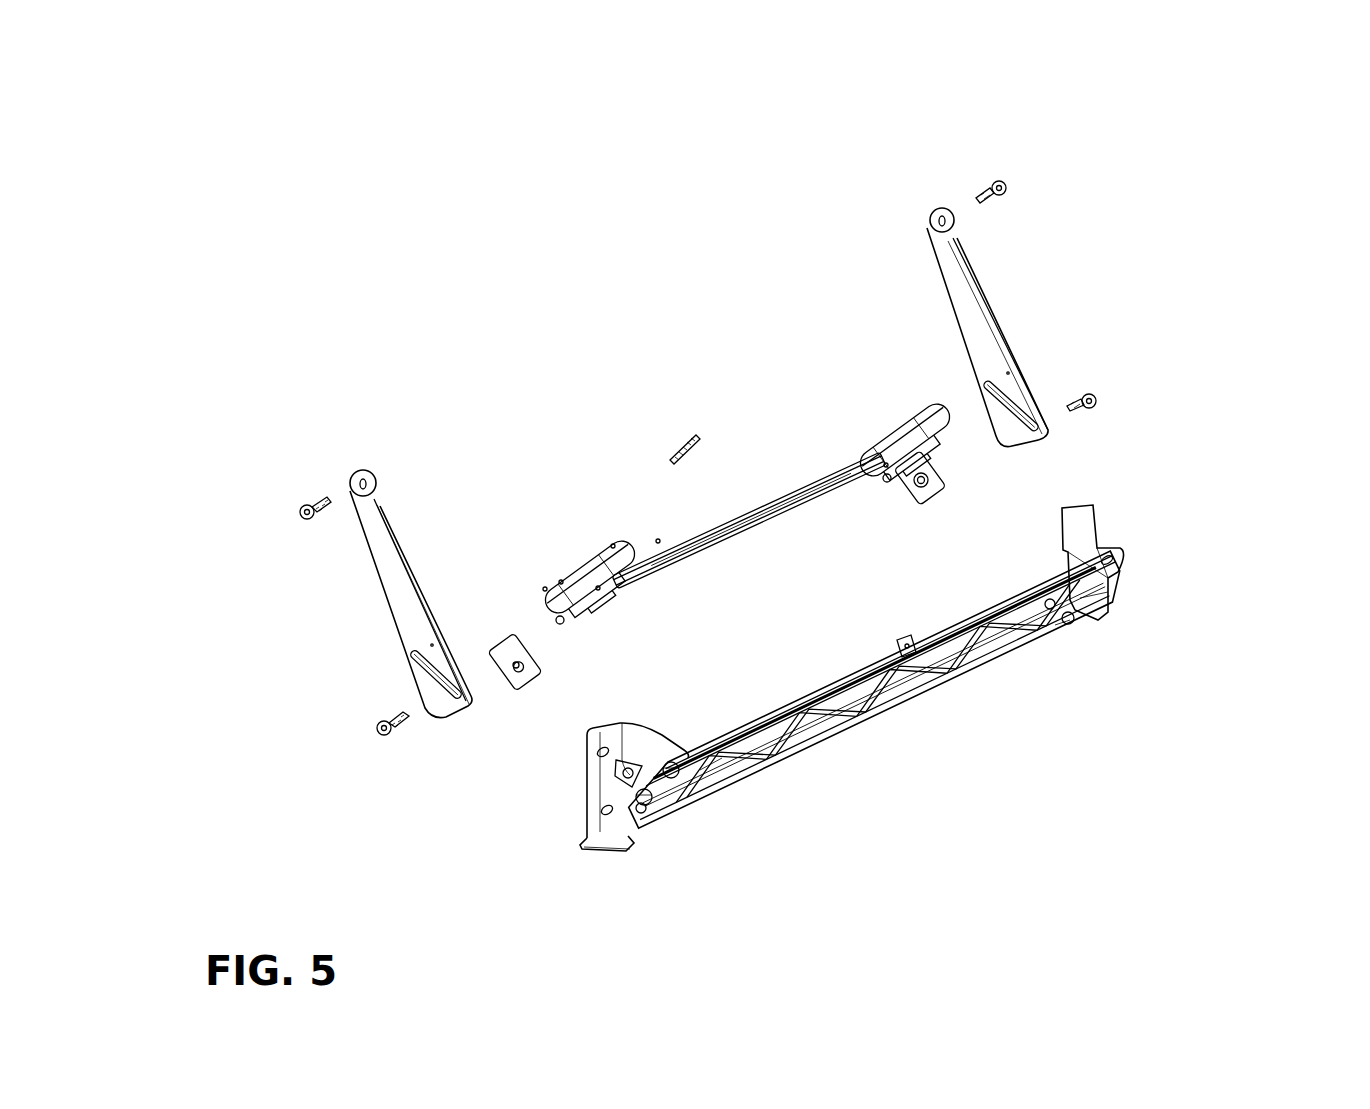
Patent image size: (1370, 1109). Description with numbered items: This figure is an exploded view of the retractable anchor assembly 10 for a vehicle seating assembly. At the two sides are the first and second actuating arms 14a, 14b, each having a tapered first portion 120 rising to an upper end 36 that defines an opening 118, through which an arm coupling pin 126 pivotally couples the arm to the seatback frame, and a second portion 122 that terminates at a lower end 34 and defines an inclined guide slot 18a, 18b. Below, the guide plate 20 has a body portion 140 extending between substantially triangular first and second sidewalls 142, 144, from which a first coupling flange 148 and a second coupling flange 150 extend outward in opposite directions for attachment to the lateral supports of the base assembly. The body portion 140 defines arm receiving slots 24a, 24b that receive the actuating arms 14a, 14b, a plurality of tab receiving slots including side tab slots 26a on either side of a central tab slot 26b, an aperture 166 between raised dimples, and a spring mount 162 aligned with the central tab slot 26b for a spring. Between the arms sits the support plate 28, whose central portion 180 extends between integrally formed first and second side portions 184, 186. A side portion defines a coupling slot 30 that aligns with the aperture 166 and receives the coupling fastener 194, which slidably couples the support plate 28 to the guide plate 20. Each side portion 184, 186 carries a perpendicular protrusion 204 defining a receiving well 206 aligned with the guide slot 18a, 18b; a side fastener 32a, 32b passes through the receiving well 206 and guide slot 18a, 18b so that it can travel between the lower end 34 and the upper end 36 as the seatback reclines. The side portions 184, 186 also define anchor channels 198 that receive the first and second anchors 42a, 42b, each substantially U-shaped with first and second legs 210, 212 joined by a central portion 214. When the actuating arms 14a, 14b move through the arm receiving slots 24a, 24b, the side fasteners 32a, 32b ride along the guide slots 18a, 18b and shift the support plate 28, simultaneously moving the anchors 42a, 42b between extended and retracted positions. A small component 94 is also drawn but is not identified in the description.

The retractable anchor assembly 10 is at (1178, 106).
The first actuating arm 14a is at (372, 623).
The second actuating arm 14b is at (1013, 295).
The guide slot 18a is at (406, 660).
The guide slot 18b is at (1020, 400).
The guide plate 20 is at (880, 720).
The arm receiving slot 24a is at (653, 824).
The arm receiving slot 24b is at (1082, 626).
The side tab slot 26a is at (754, 770).
The central tab slot 26b is at (868, 722).
The support plate 28 is at (638, 505).
The coupling slot 30 is at (560, 624).
The side fastener 32a is at (385, 736).
The side fastener 32b is at (1100, 401).
The lower end 34 is at (450, 718).
The upper end 36 is at (362, 496).
The first anchor 42a is at (594, 550).
The second anchor 42b is at (903, 413).
The screw 94 is at (688, 438).
The opening 118 is at (363, 470).
The first portion 120 is at (386, 582).
The second portion 122 is at (432, 644).
The arm coupling pin 126 is at (305, 500).
The body portion 140 is at (812, 742).
The first sidewall 142 is at (640, 750).
The second sidewall 144 is at (1085, 545).
The first coupling flange 148 is at (609, 822).
The second coupling flange 150 is at (1097, 600).
The spring mount 162 is at (898, 642).
The aperture 166 is at (712, 778).
The central portion 180 is at (748, 506).
The first side portion 184 is at (598, 590).
The second side portion 186 is at (884, 462).
The coupling fastener 194 is at (1062, 632).
The anchor channel 198 is at (543, 586).
The protrusion 204 is at (521, 700).
The receiving well 206 is at (530, 657).
The first leg 210 is at (560, 580).
The second leg 212 is at (658, 540).
The central portion 214 is at (613, 545).